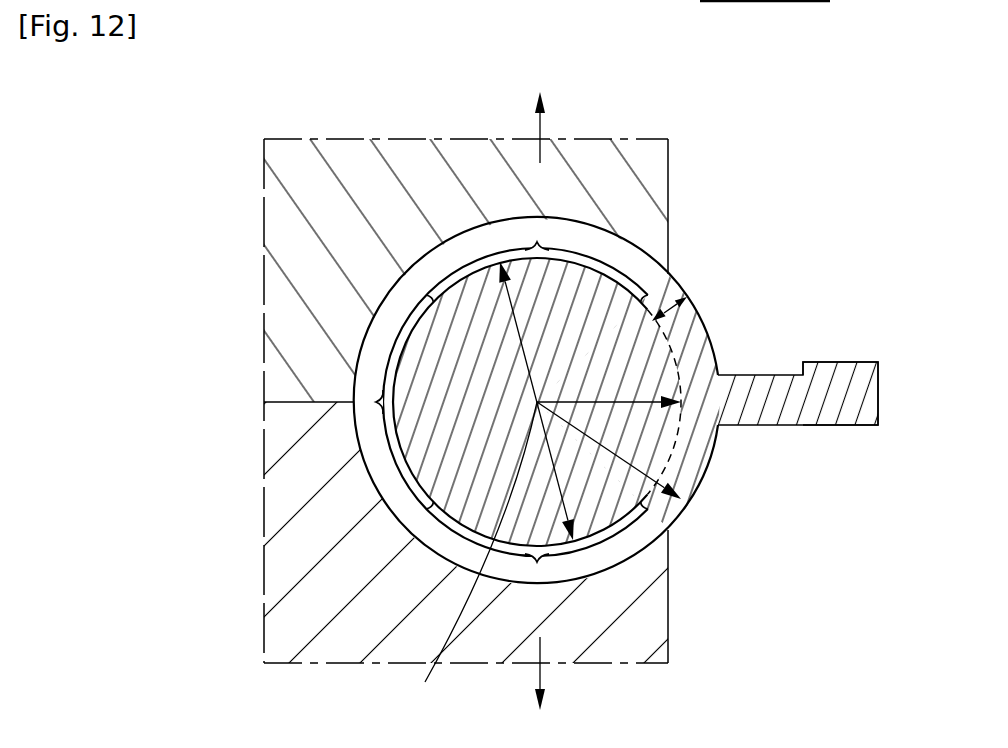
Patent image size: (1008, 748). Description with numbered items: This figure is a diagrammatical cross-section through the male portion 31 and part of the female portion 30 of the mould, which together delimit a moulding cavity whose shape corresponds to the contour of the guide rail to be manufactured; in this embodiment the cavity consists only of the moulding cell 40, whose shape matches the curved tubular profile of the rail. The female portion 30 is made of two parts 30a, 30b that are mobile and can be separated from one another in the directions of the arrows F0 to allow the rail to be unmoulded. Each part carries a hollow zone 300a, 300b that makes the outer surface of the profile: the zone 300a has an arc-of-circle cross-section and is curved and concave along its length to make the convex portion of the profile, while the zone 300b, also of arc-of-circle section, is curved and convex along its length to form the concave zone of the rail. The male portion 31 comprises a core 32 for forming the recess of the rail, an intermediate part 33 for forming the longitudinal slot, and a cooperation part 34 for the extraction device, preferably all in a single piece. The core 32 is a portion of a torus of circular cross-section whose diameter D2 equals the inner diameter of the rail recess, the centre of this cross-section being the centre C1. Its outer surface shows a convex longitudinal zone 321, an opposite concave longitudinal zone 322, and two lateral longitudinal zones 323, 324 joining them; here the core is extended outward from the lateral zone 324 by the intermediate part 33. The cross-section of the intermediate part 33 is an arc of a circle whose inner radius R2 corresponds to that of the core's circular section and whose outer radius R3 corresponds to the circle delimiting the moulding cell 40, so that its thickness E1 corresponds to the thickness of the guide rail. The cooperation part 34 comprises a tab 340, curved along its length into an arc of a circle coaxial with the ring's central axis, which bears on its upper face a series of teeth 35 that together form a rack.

The female portion 30 is at (393, 401).
The part of the female portion 30a is at (303, 367).
The part of the female portion 30b is at (303, 452).
The hollow zone 300a is at (490, 235).
The hollow zone 300b is at (431, 531).
The male portion 31 is at (756, 302).
The core 32 is at (488, 417).
The convex longitudinal zone 321 is at (538, 243).
The concave longitudinal zone 322 is at (538, 557).
The lateral longitudinal zone 323 is at (383, 399).
The lateral longitudinal zone 324 is at (700, 346).
The intermediate part 33 is at (692, 457).
The cooperation part 34 is at (808, 482).
The tab 340 is at (803, 402).
The teeth 35 is at (858, 377).
The moulding cell 40 is at (613, 247).
The thickness of the intermediate part E1 is at (670, 313).
The diameter of the torus cross-section D2 is at (536, 401).
The inner radius of the intermediate part R2 is at (609, 390).
The outer radius of the intermediate part R3 is at (609, 450).
The centre of the cross-section of the core C1 is at (472, 555).
The separation arrows F0 is at (524, 402).